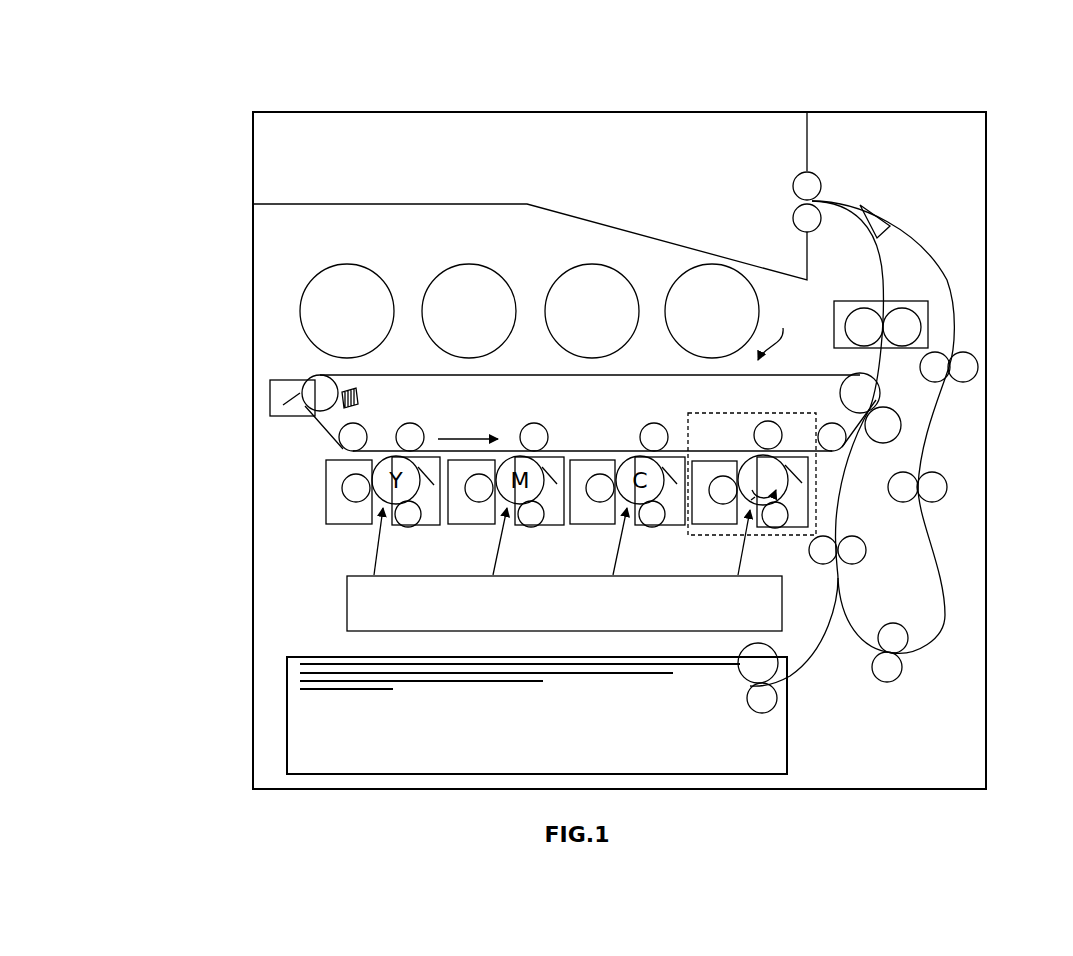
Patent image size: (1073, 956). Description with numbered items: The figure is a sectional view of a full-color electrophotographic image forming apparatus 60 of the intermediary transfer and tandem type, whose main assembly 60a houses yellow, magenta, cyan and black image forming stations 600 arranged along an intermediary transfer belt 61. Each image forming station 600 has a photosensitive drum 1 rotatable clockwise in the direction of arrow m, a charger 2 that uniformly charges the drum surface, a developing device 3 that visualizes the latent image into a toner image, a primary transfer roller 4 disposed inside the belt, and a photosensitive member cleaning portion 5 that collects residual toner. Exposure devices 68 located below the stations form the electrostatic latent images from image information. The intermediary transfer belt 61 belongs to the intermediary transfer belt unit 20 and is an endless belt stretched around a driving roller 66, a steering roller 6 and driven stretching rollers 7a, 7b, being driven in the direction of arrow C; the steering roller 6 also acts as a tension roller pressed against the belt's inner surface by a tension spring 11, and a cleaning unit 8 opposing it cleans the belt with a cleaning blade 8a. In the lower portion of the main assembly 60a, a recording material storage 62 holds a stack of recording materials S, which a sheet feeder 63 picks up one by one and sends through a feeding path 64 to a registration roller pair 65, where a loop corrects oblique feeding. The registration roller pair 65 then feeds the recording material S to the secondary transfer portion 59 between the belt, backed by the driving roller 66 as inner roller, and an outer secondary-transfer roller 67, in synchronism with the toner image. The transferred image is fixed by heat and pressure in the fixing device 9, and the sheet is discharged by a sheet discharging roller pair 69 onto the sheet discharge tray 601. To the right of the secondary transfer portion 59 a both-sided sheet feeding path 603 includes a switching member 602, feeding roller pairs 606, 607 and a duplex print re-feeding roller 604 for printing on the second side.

The image forming apparatus 60 is at (742, 92).
The main assembly 60a is at (253, 258).
The sheet discharge tray 601 is at (622, 230).
The switching member 602 is at (893, 221).
The both-sided sheet feeding path 603 is at (946, 272).
The duplex print re-feeding roller 604 is at (900, 668).
The feeding roller pair 606 is at (972, 372).
The feeding roller pair 607 is at (943, 490).
The sheet discharging roller pair 69 is at (800, 186).
The fixing device 9 is at (862, 308).
The driving roller 66 is at (866, 392).
The secondary transfer portion 59 is at (880, 410).
The outer secondary-transfer roller 67 is at (878, 437).
The registration roller pair 65 is at (852, 548).
The feeding path 64 is at (843, 580).
The sheet feeder 63 is at (752, 668).
The recording material storage 62 is at (788, 742).
The recording material S is at (628, 668).
The exposure device 68 is at (355, 600).
The intermediary transfer belt 61 is at (323, 430).
The cleaning unit 8 is at (275, 393).
The cleaning blade 8a is at (292, 414).
The steering roller 6 is at (322, 388).
The tension spring 11 is at (355, 390).
The driven stretching roller 7a is at (357, 430).
The driven stretching roller 7b is at (832, 426).
The primary transfer roller 4 is at (413, 430).
The belt driving direction C is at (468, 424).
The intermediary transfer belt unit 20 is at (777, 330).
The image forming station 600 is at (702, 426).
The photosensitive drum 1 is at (748, 457).
The charger 2 is at (777, 521).
The developing device 3 is at (708, 515).
The photosensitive member cleaning portion 5 is at (790, 473).
The drum rotation direction m is at (752, 503).